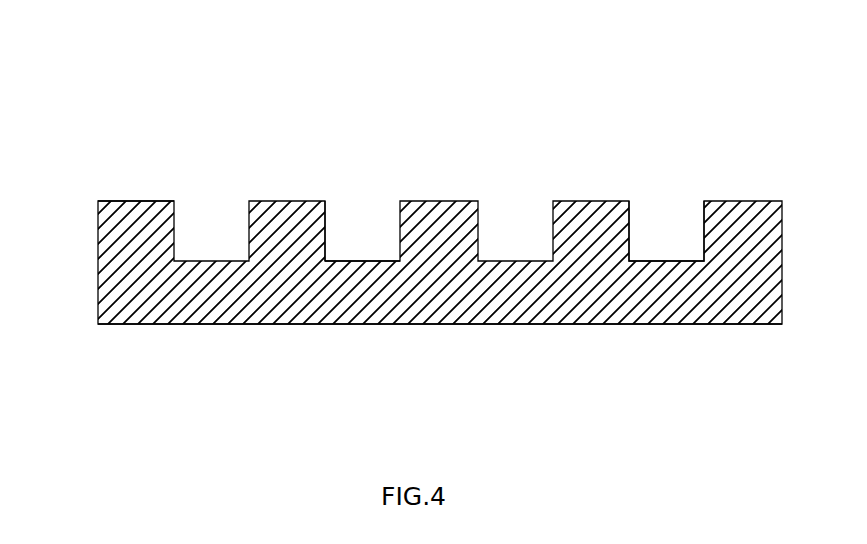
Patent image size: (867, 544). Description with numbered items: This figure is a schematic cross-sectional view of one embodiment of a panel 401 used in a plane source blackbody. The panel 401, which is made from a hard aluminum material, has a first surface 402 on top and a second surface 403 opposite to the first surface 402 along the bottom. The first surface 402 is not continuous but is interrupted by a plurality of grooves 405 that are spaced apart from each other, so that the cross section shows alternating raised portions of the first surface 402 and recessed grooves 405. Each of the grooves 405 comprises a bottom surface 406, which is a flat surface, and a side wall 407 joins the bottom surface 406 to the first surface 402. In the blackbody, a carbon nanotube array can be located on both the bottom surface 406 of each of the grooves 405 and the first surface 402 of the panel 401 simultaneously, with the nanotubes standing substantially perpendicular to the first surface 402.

The panel 401 is at (430, 102).
The first surface 402 is at (135, 200).
The second surface 403 is at (140, 323).
The grooves 405 is at (666, 227).
The bottom surface 406 is at (362, 260).
The groove side wall 407 is at (327, 213).